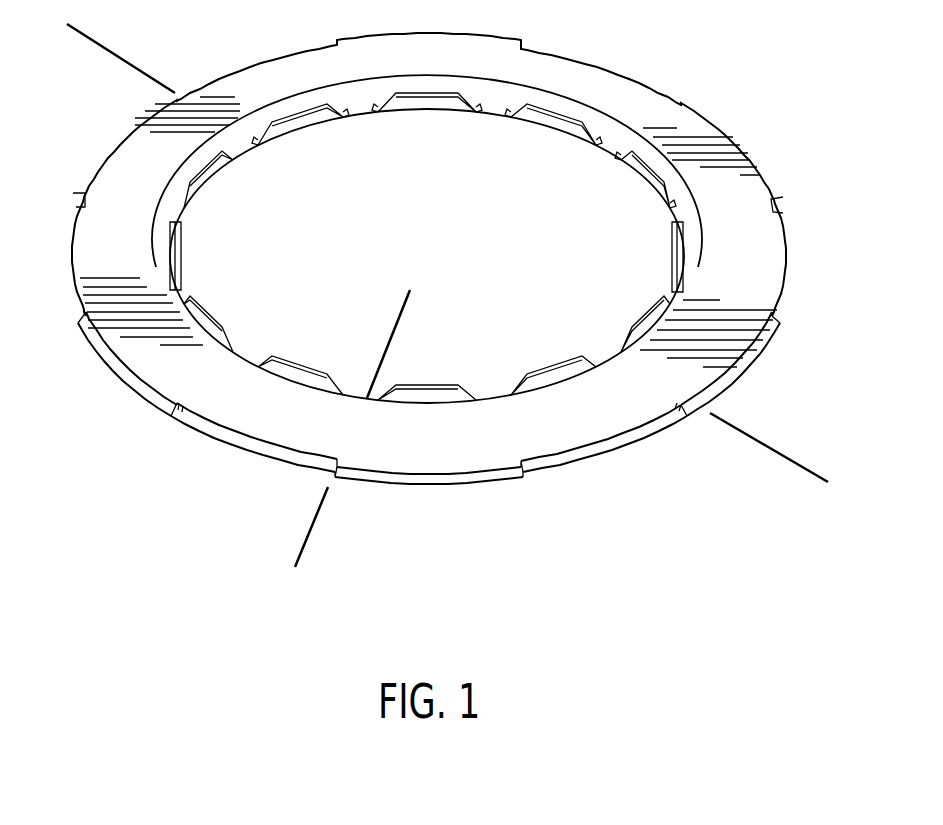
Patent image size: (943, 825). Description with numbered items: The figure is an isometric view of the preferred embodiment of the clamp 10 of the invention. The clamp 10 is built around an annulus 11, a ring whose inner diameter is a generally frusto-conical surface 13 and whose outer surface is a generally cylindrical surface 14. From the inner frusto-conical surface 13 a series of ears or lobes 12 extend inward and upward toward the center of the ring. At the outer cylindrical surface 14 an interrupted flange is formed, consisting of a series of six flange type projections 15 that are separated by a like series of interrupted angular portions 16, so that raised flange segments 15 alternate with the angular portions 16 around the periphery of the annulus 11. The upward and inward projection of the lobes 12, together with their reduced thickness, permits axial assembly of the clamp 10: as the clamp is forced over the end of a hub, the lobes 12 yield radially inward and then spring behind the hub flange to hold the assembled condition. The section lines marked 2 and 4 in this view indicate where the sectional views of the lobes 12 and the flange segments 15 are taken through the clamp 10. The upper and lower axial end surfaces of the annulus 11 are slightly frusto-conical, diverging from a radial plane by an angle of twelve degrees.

The clamp 10 is at (648, 80).
The annulus 11 is at (745, 295).
The ears or lobes 12 is at (542, 118).
The inner diameter frusto-conical surface 13 is at (232, 135).
The outer cylindrical surface 14 is at (604, 446).
The flange type projections 15 is at (737, 387).
The interrupted angular portions 16 is at (785, 222).
The section line 2- 2 is at (400, 302).
The section line 4- 4 is at (70, 34).